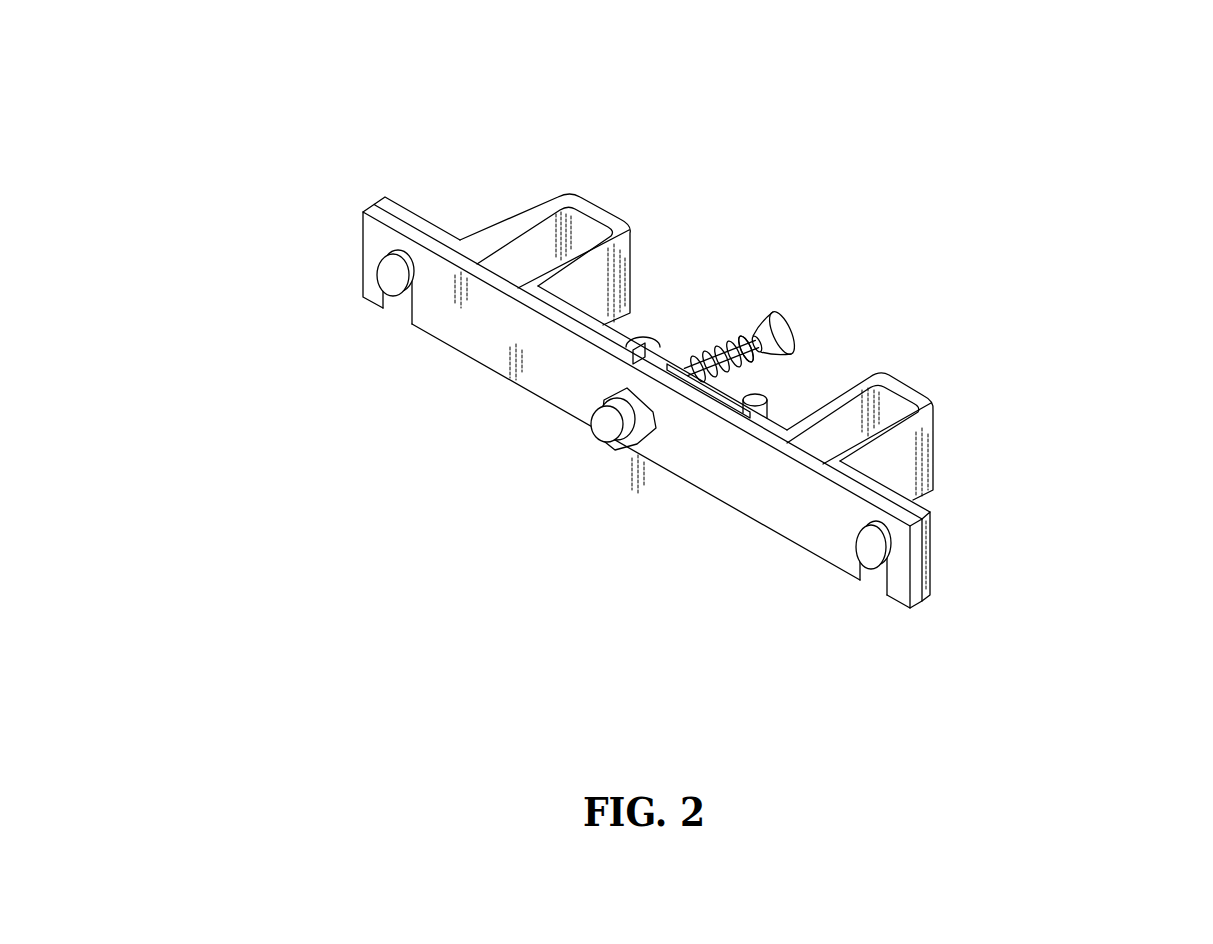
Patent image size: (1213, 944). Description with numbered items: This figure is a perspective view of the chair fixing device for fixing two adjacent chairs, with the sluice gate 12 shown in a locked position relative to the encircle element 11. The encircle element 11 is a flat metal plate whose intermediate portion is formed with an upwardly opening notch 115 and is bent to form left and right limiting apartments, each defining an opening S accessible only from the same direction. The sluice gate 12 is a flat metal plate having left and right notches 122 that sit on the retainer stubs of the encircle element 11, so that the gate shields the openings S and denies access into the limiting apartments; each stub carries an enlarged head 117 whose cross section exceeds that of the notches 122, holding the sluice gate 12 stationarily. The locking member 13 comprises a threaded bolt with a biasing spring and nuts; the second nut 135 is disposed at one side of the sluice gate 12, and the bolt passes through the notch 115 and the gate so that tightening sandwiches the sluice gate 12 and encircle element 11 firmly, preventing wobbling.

The encircle element 11 is at (922, 378).
The sluice gate 12 is at (742, 482).
The locking member 13 is at (710, 328).
The notch 115 is at (656, 364).
The enlarged head 117 is at (393, 276).
The left and right notches 122 is at (400, 310).
The second nut 135 is at (607, 428).
The opening S is at (537, 243).